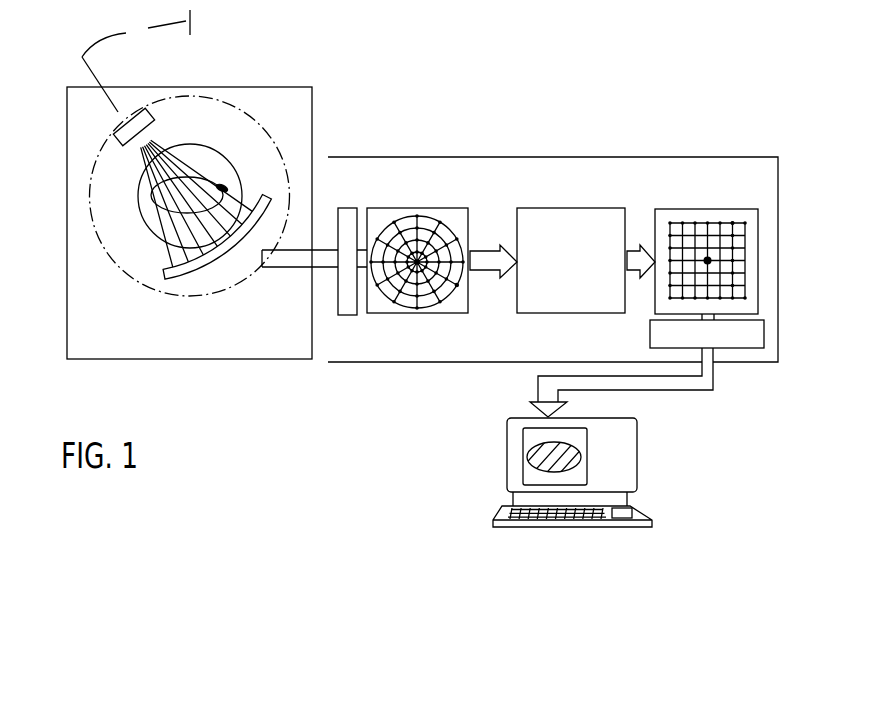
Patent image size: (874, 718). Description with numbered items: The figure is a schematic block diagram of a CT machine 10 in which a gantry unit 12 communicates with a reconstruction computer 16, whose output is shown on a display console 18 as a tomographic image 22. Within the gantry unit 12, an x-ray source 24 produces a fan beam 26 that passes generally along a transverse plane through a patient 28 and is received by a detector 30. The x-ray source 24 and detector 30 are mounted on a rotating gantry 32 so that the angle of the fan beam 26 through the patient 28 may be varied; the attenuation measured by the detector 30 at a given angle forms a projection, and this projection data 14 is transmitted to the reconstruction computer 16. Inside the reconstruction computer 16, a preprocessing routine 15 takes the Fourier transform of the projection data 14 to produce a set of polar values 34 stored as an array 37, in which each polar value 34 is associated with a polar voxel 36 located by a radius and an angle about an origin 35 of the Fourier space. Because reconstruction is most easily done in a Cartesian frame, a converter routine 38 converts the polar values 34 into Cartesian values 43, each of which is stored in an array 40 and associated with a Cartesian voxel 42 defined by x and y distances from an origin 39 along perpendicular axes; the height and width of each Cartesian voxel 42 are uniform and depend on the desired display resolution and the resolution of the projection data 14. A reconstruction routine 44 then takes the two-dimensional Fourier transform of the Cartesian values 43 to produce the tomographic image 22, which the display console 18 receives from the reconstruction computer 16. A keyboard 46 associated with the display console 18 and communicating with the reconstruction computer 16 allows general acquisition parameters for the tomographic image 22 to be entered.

The CT machine 10 is at (462, 80).
The gantry unit 12 is at (257, 87).
The projection data 14 is at (313, 270).
The preprocessing routine 15 is at (352, 317).
The reconstruction computer 16 is at (490, 157).
The display console 18 is at (640, 445).
The tomographic image 22 is at (523, 437).
The x-ray source 24 is at (147, 107).
The fan beam 26 is at (240, 190).
The patient 28 is at (152, 190).
The detector 30 is at (210, 283).
The rotating gantry 32 is at (265, 128).
The polar values 34 is at (430, 303).
The origin 35 is at (420, 263).
The polar voxel 36 is at (458, 250).
The array 37 is at (456, 305).
The converter routine 38 is at (590, 205).
The origin 39 is at (708, 263).
The array 40 is at (755, 210).
The Cartesian voxel 42 is at (740, 235).
The Cartesian values 43 is at (758, 247).
The reconstruction routine 44 is at (765, 333).
The keyboard 46 is at (640, 513).